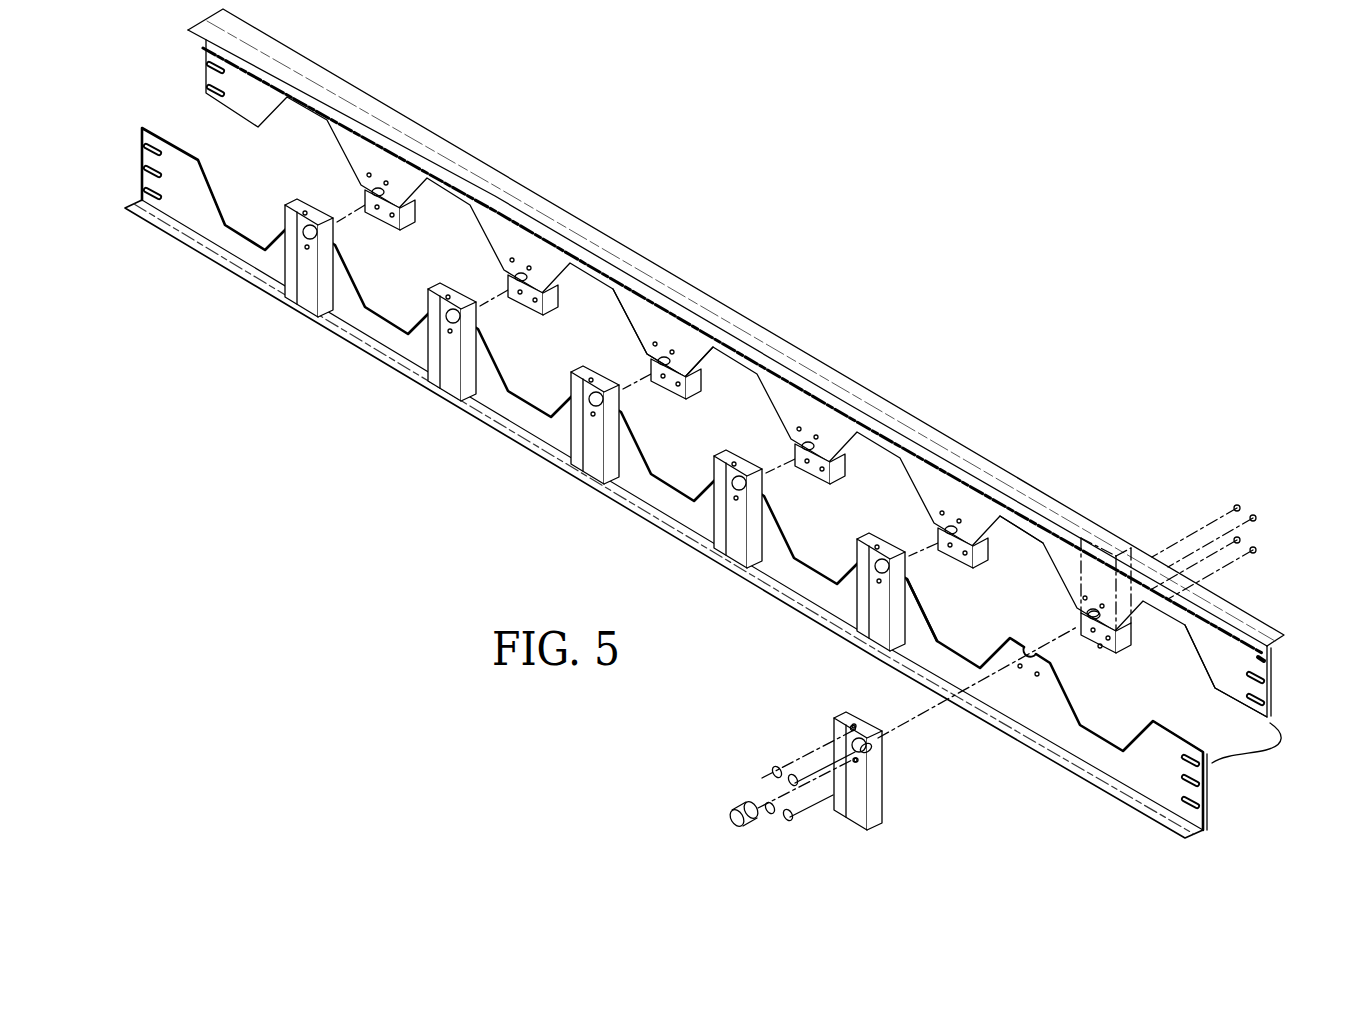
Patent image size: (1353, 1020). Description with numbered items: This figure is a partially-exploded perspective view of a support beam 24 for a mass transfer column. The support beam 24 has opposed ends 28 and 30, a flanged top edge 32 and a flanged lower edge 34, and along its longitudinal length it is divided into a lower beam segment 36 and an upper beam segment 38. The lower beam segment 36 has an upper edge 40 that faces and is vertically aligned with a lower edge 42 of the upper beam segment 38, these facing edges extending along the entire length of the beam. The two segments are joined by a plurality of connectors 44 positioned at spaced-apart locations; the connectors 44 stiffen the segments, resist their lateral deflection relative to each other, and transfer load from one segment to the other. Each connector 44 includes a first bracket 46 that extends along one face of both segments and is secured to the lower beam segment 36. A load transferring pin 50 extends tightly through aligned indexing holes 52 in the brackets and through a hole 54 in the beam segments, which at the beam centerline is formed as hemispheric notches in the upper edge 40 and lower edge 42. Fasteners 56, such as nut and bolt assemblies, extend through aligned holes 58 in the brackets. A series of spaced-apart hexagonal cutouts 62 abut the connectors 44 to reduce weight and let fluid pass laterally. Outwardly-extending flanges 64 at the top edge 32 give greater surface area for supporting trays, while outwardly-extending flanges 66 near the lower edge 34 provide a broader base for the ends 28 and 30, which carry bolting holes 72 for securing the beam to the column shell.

The support beam 24 is at (738, 363).
The opposed end 28 is at (140, 162).
The opposed end 30 is at (677, 486).
The flanged top edge 32 is at (738, 373).
The flanged lower edge 34 is at (664, 522).
The lower beam segment 36 is at (545, 425).
The upper beam segment 38 is at (652, 322).
The upper edge 40 is at (1155, 724).
The lower edge 42 is at (1232, 700).
The connector 44 is at (1080, 648).
The first bracket 46 is at (1125, 636).
The load transferring pin 50 is at (728, 818).
The indexing hole 52 is at (868, 752).
The hole 54 is at (1030, 652).
The fastener 56 is at (770, 803).
The hole 58 is at (853, 728).
The cutout 62 is at (930, 621).
The outwardly-extending flange 64 is at (1218, 628).
The outwardly-extending flange 66 is at (1203, 813).
The bolting hole 72 is at (218, 90).